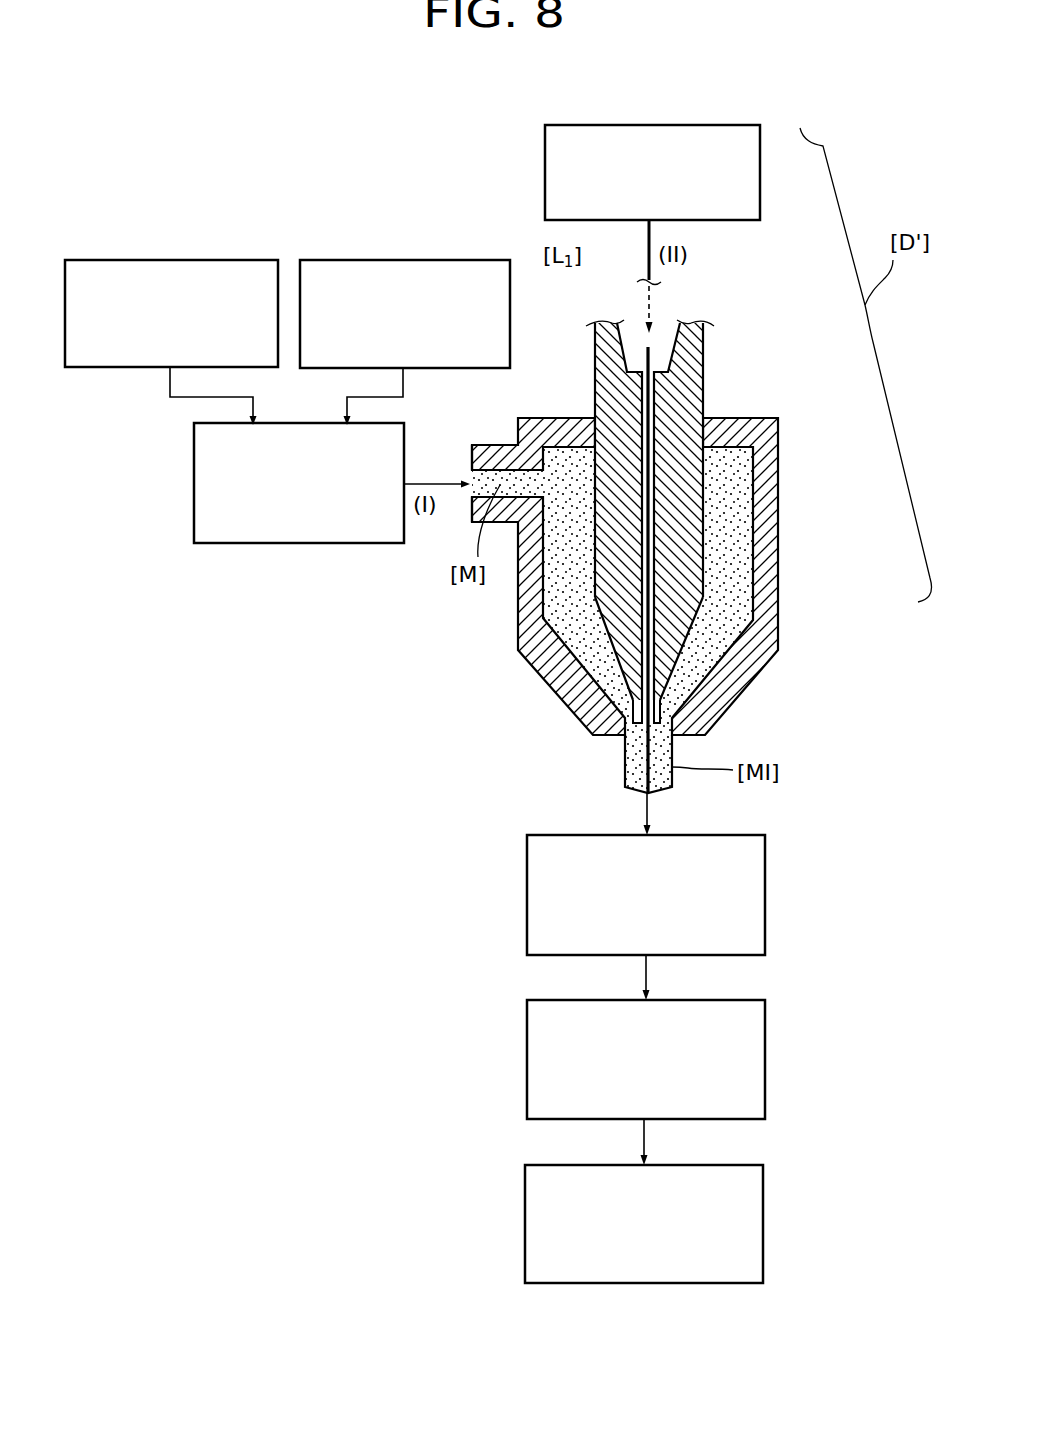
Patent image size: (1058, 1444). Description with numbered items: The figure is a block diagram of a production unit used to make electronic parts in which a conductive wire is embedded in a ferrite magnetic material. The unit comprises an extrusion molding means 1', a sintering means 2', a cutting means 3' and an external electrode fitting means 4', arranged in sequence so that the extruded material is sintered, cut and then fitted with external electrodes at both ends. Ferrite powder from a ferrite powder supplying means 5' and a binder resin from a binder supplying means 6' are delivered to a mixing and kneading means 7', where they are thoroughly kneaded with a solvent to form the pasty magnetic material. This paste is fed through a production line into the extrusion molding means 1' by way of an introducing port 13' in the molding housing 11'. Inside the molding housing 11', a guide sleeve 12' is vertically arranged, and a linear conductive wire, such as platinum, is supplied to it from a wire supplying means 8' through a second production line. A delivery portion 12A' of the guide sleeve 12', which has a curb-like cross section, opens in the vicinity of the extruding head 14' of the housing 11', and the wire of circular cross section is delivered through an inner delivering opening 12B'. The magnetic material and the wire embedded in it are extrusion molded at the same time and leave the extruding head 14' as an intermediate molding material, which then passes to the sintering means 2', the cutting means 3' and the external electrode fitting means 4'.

The extrusion molding means 1' is at (664, 558).
The sintering means 2' is at (678, 895).
The cutting means 3' is at (678, 1059).
The external electrode fitting means 4' is at (676, 1224).
The ferrite powder supplying means 5' is at (171, 281).
The binder supplying means 6' is at (405, 282).
The mixing and kneading means 7' is at (299, 524).
The wire supplying means 8' is at (681, 179).
The molding housing 11' is at (625, 576).
The guide sleeve 12' is at (642, 556).
The delivery portion 12A' is at (738, 714).
The inner delivering opening 12B' is at (540, 570).
The introducing port 13' is at (490, 459).
The extruding head 14' is at (611, 765).